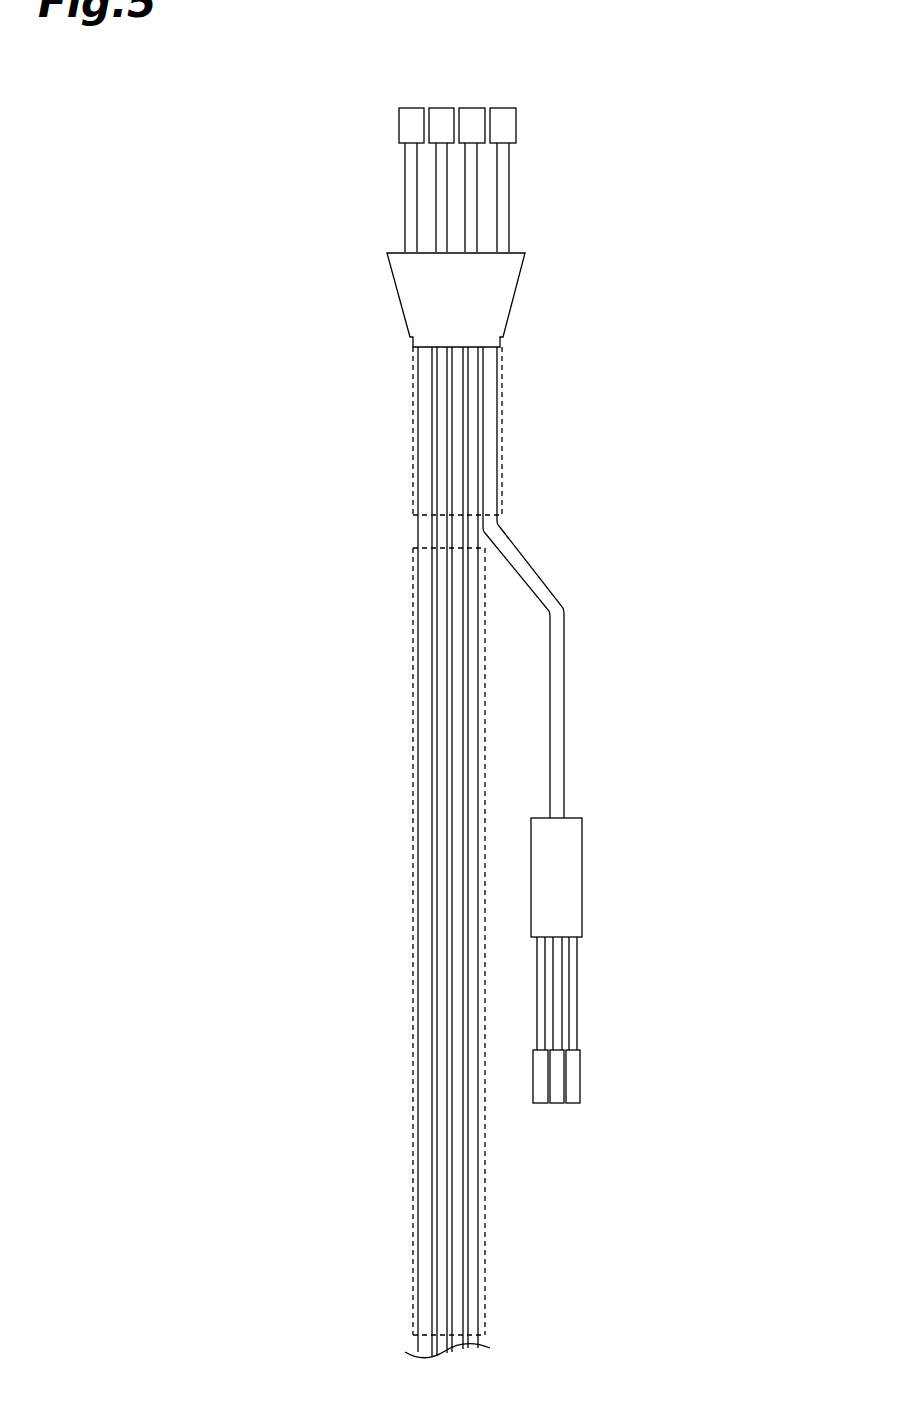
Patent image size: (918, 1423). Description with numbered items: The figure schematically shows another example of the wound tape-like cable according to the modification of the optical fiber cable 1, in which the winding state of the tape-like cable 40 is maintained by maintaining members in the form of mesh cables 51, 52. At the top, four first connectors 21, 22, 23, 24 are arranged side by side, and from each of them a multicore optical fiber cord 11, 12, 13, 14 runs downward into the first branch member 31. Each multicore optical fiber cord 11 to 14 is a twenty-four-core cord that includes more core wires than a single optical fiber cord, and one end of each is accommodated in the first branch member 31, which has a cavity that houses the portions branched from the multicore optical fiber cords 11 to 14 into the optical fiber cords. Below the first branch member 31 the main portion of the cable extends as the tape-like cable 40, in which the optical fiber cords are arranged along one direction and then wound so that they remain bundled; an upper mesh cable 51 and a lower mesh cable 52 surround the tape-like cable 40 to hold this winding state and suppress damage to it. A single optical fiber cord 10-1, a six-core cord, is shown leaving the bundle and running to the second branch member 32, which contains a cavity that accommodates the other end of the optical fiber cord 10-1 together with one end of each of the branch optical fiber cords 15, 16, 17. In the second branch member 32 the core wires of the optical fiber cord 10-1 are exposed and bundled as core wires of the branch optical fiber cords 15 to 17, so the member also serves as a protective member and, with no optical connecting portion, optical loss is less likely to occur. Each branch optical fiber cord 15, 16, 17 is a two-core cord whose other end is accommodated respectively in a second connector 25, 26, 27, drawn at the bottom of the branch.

The optical fiber cable 1 is at (629, 177).
The optical fiber cord 10-1 is at (500, 377).
The multicore optical fiber cord 11 is at (509, 212).
The multicore optical fiber cord 12 is at (478, 177).
The multicore optical fiber cord 13 is at (436, 207).
The multicore optical fiber cord 14 is at (404, 177).
The branch optical fiber cord 15 is at (578, 962).
The branch optical fiber cord 16 is at (560, 993).
The branch optical fiber cord 17 is at (543, 1030).
The first connector 21 is at (504, 115).
The first connector 22 is at (471, 118).
The first connector 23 is at (442, 118).
The first connector 24 is at (410, 120).
The second connector 25 is at (572, 1096).
The second connector 26 is at (560, 1096).
The second connector 27 is at (542, 1096).
The first branch member 31 is at (510, 294).
The second branch member 32 is at (570, 870).
The tape-like cable 40 is at (417, 524).
The mesh cable 51 is at (412, 443).
The mesh cable 52 is at (412, 703).